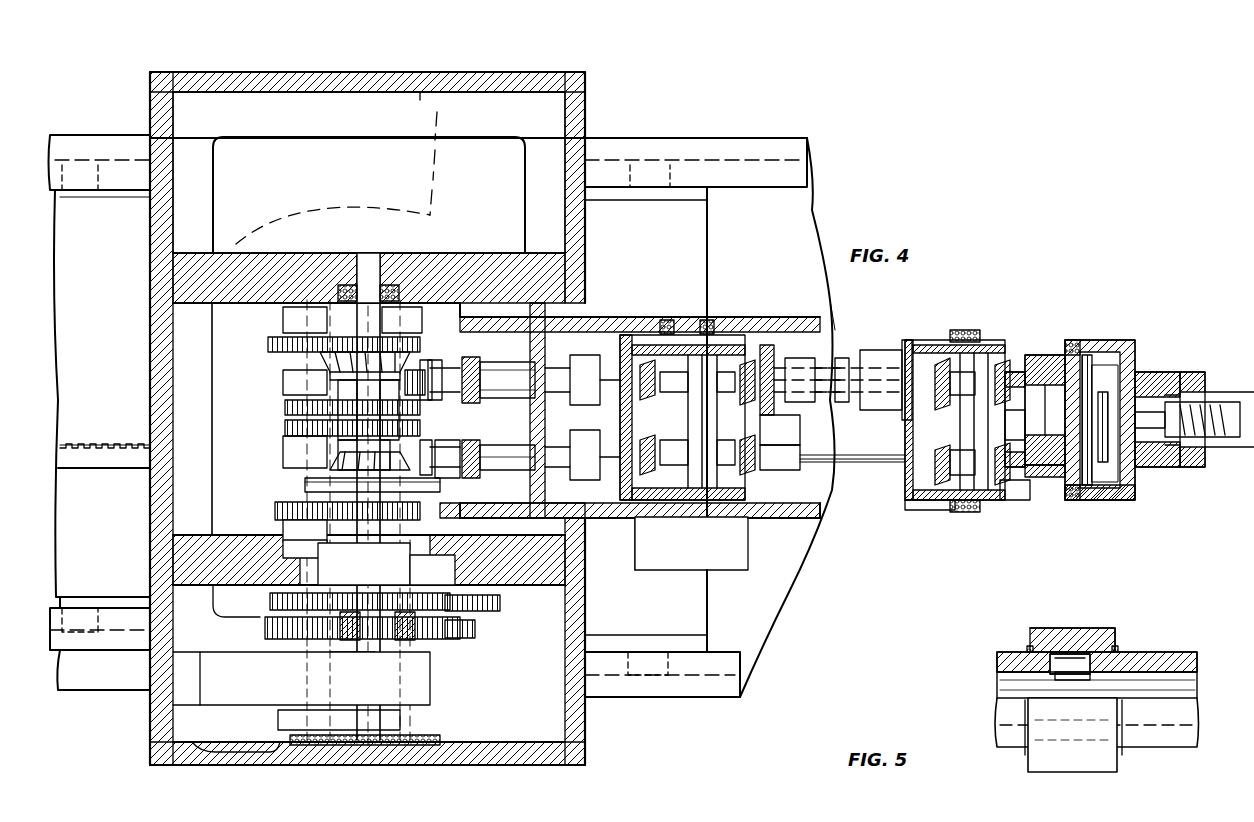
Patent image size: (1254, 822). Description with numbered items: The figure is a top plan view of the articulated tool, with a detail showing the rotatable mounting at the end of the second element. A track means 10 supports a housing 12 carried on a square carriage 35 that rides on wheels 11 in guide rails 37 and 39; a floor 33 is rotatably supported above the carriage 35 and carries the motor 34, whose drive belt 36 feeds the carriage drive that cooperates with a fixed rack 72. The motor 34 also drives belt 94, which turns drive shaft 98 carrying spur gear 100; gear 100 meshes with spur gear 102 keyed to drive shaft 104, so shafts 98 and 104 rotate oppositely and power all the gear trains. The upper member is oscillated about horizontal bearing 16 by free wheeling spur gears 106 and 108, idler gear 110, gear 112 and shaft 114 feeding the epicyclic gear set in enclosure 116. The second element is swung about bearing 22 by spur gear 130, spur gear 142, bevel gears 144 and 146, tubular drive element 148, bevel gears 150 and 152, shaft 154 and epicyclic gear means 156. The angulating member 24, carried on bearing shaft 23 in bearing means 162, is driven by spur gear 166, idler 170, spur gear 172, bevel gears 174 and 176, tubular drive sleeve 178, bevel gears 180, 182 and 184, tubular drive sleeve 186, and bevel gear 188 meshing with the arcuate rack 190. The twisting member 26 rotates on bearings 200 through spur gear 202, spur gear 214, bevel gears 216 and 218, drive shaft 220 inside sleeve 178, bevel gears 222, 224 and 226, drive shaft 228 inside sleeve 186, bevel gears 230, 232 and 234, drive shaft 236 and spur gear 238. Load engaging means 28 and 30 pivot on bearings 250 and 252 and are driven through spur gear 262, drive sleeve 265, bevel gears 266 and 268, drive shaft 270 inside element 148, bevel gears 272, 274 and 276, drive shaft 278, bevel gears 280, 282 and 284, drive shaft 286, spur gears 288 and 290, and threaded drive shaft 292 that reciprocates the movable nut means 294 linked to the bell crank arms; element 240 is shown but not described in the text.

In FIG. 4, the track means 10 is at (770, 130).
In FIG. 4, the wheels 11 is at (88, 140).
In FIG. 4, the housing 12 is at (150, 258).
In FIG. 4, the horizontal bearing 16 is at (366, 290).
In FIG. 4, the bearing means 22 is at (692, 424).
In FIG. 4, the bearing shaft 23 is at (975, 510).
In FIG. 4, the angulating member 24 is at (1020, 505).
In FIG. 4, the twisting member 26 is at (1100, 340).
In FIG. 4, the load engaging means 28 is at (1220, 390).
In FIG. 4, the load engaging means 30 is at (1220, 455).
In FIG. 4, the floor 33 is at (406, 108).
In FIG. 4, the motor 34 is at (264, 150).
In FIG. 4, the square carriage 35 is at (700, 238).
In FIG. 4, the drive belt 36 is at (392, 740).
In FIG. 4, the guide rail 37 is at (722, 690).
In FIG. 4, the guide rail 39 is at (630, 140).
In FIG. 4, the rack 72 is at (102, 492).
In FIG. 4, the belt 94 is at (215, 688).
In FIG. 4, the drive shaft 98 is at (310, 738).
In FIG. 4, the spur gear 100 is at (268, 628).
In FIG. 4, the spur gear 102 is at (470, 640).
In FIG. 4, the drive shaft 104 is at (450, 710).
In FIG. 4, the free wheeling spur gear 106 is at (270, 600).
In FIG. 4, the free wheeling spur gear 108 is at (462, 602).
In FIG. 4, the idler gear 110 is at (500, 620).
In FIG. 4, the gear 112 is at (353, 677).
In FIG. 4, the shaft 114 is at (372, 600).
In FIG. 4, the epicyclic gear set enclosure 116 is at (360, 566).
In FIG. 4, the free wheeling spur gear 130 is at (282, 508).
In FIG. 4, the spur gear 142 is at (290, 532).
In FIG. 4, the bevel gear 144 is at (310, 484).
In FIG. 4, the bevel gear 146 is at (462, 518).
In FIG. 4, the tubular drive element 148 is at (480, 420).
In FIG. 4, the bevel gear 150 is at (610, 512).
In FIG. 4, the bevel gear 152 is at (755, 512).
In FIG. 4, the shaft 154 is at (290, 425).
In FIG. 4, the epicyclic gear means 156 is at (740, 582).
In FIG. 4, the bearing means 162 is at (964, 340).
In FIG. 4, the free wheeling spur gear 166 is at (272, 342).
In FIG. 4, the idler 170 is at (292, 318).
In FIG. 4, the spur gear 172 is at (388, 360).
In FIG. 4, the bevel gear 174 is at (348, 352).
In FIG. 4, the bevel gear 176 is at (438, 360).
In FIG. 4, the tubular drive sleeve 178 is at (468, 340).
In FIG. 5, the tubular drive sleeve 178 is at (1010, 660).
In FIG. 4, the bevel gear 180 is at (634, 330).
In FIG. 4, the bevel gear 182 is at (690, 355).
In FIG. 4, the bevel gear 184 is at (762, 420).
In FIG. 4, the tubular drive sleeve 186 is at (835, 395).
In FIG. 4, the bevel gear 188 is at (897, 345).
In FIG. 4, the arcuate rack 190 is at (925, 345).
In FIG. 4, the bearings 200 is at (1060, 338).
In FIG. 4, the spur gear 202 is at (290, 406).
In FIG. 4, the spur gear 214 is at (330, 392).
In FIG. 4, the bevel gear 216 is at (340, 395).
In FIG. 4, the bevel gear 218 is at (410, 340).
In FIG. 4, the drive shaft 220 is at (508, 380).
In FIG. 5, the drive shaft 220 is at (1152, 690).
In FIG. 4, the bevel gear 222 is at (665, 392).
In FIG. 4, the bevel gear 224 is at (748, 330).
In FIG. 4, the bevel gear 226 is at (770, 345).
In FIG. 4, the drive shaft 228 is at (846, 340).
In FIG. 4, the bevel gear 230 is at (952, 400).
In FIG. 4, the bevel gear 232 is at (1002, 345).
In FIG. 4, the bevel gear 234 is at (1017, 424).
In FIG. 4, the drive shaft 236 is at (1038, 362).
In FIG. 4, the spur gear 238 is at (1087, 350).
In FIG. 4, the housing bottom 240 is at (1078, 505).
In FIG. 4, the bearing 250 is at (1188, 370).
In FIG. 4, the bearing 252 is at (1195, 467).
In FIG. 4, the spur gear 262 is at (295, 440).
In FIG. 4, the drive sleeve 265 is at (330, 445).
In FIG. 4, the bevel gear 266 is at (335, 460).
In FIG. 4, the bevel gear 268 is at (462, 480).
In FIG. 4, the drive shaft 270 is at (518, 470).
In FIG. 4, the bevel gear 272 is at (640, 522).
In FIG. 4, the bevel gear 274 is at (678, 520).
In FIG. 4, the bevel gear 276 is at (762, 475).
In FIG. 4, the drive shaft 278 is at (840, 518).
In FIG. 4, the bevel gear 280 is at (905, 480).
In FIG. 4, the bevel gear 282 is at (930, 505).
In FIG. 4, the bevel gear 284 is at (1020, 505).
In FIG. 4, the drive shaft 286 is at (1038, 470).
In FIG. 4, the spur gear 288 is at (1105, 500).
In FIG. 4, the spur gear 290 is at (1108, 400).
In FIG. 4, the drive shaft 292 is at (1150, 470).
In FIG. 4, the movable nut means 294 is at (1155, 400).